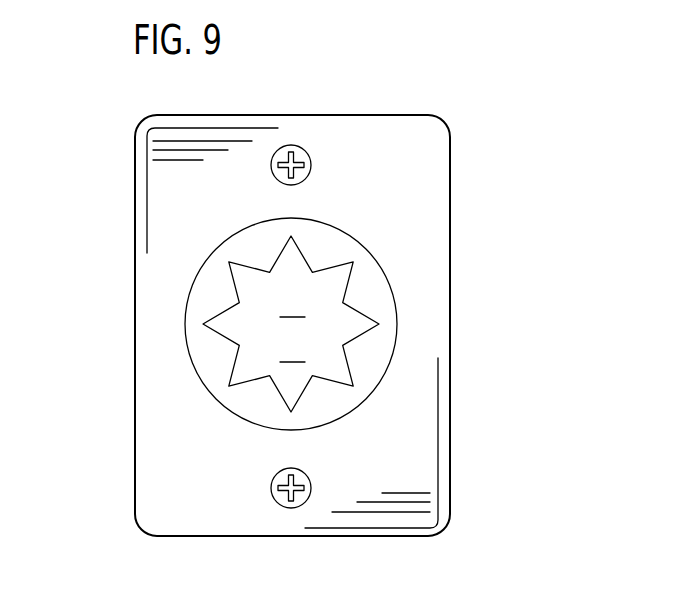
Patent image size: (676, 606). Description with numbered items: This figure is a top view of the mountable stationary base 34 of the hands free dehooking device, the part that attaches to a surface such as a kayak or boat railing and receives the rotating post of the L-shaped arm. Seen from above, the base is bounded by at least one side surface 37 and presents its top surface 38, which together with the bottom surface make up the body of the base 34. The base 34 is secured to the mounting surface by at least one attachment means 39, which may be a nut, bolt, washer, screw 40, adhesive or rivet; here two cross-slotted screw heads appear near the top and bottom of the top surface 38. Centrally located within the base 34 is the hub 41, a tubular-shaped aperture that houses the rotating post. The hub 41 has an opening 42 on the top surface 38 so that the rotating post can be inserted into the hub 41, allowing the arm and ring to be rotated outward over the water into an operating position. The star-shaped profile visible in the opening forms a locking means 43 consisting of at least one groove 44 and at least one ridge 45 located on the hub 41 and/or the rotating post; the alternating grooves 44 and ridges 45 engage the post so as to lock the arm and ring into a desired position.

The mountable stationary base 34 is at (324, 304).
The side surface 37 is at (387, 115).
The top surface 38 is at (372, 295).
The attachment means 39 is at (333, 290).
The screw 40 is at (311, 478).
The hub 41 is at (292, 301).
The opening 42 is at (292, 346).
The locking means 43 is at (290, 320).
The groove 44 is at (304, 320).
The ridge 45 is at (95, 265).